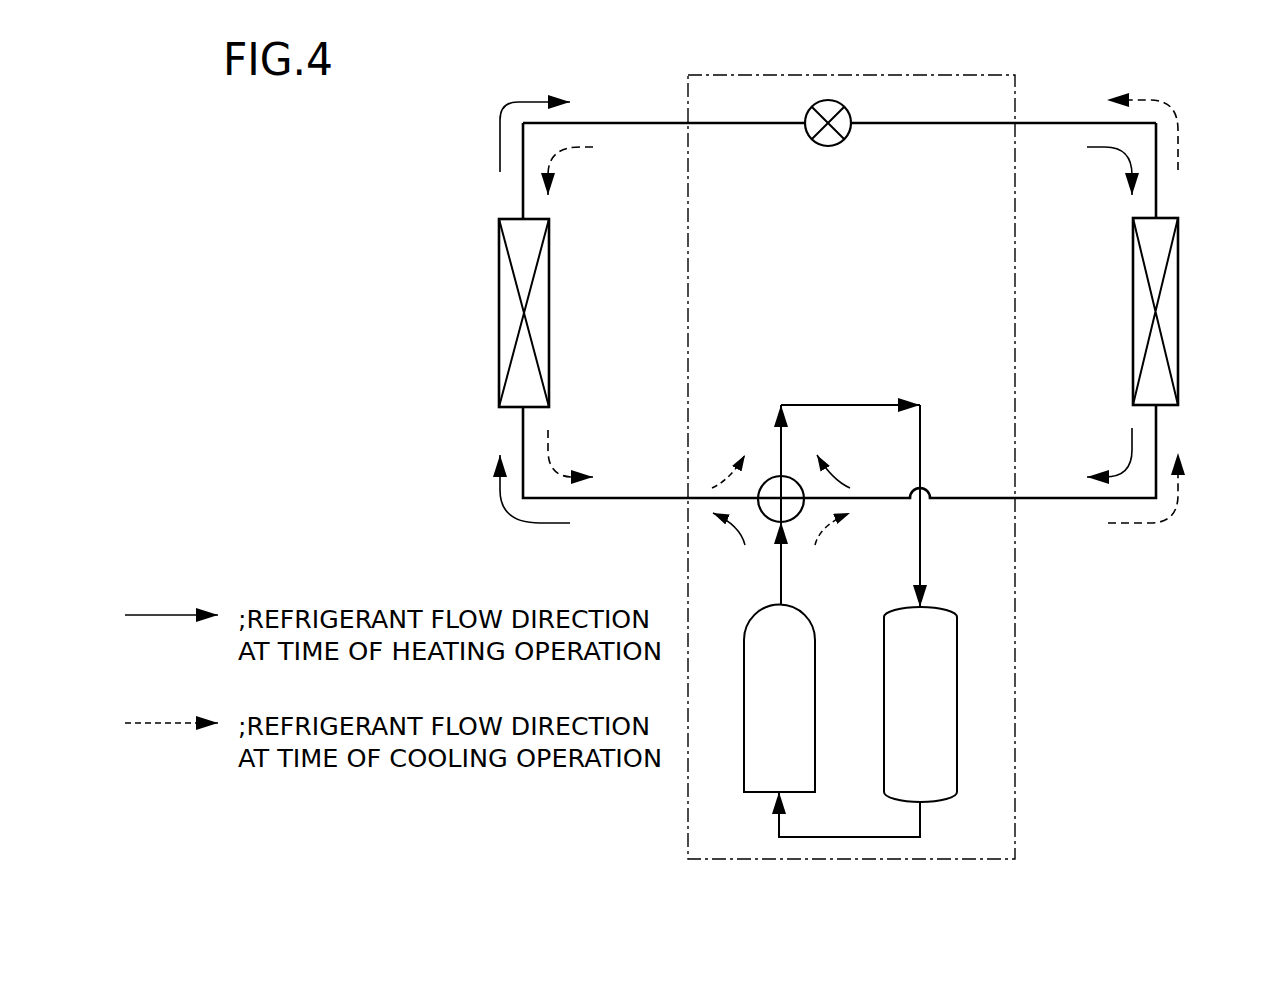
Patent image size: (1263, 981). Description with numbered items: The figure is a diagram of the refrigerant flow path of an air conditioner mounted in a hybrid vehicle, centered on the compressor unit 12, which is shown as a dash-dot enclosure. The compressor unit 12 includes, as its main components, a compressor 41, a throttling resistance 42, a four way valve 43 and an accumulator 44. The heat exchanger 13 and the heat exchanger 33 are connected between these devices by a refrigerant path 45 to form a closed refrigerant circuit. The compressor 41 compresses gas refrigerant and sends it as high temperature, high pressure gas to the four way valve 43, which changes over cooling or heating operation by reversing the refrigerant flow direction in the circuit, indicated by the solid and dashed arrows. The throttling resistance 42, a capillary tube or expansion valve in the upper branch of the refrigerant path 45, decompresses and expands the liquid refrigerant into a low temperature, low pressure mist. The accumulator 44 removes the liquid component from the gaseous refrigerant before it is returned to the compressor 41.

The compressor unit 12 is at (1015, 738).
The heat exchanger 13 is at (498, 262).
The heat exchanger 33 is at (1180, 258).
The compressor 41 is at (744, 660).
The throttling resistance 42 is at (831, 147).
The four way valve 43 is at (772, 478).
The accumulator 44 is at (958, 693).
The refrigerant path 45 is at (632, 123).